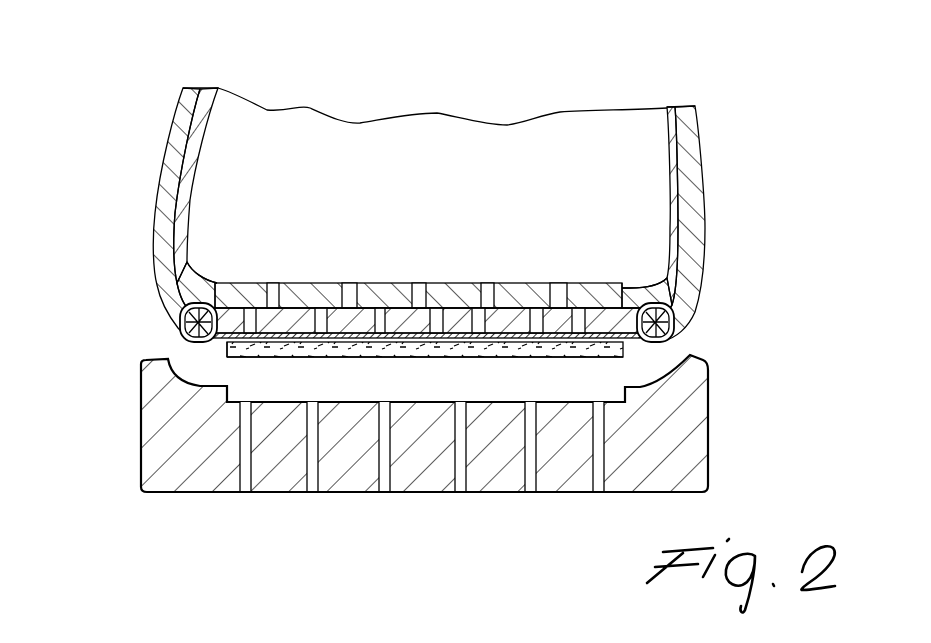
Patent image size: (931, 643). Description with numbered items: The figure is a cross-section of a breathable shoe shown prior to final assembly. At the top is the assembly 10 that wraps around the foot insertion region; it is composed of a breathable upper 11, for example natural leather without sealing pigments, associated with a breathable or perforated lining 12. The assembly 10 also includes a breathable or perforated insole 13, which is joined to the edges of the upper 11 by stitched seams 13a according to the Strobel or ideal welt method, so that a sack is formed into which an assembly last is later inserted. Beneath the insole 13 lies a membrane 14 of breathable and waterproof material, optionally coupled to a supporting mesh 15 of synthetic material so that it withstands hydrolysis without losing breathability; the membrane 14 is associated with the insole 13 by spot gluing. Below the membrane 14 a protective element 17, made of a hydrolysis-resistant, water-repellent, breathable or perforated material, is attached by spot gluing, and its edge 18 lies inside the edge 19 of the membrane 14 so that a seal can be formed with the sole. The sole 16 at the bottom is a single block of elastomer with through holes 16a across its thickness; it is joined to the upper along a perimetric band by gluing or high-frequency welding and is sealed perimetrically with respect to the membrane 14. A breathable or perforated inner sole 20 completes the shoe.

The assembly 10 is at (95, 90).
The upper 11 is at (178, 123).
The lining 12 is at (208, 150).
The insole 13 is at (393, 320).
The stitched seams 13a is at (186, 312).
The membrane 14 is at (490, 308).
The supporting mesh 15 is at (592, 356).
The sole 16 is at (680, 463).
The through holes 16a is at (528, 470).
The protective element 17 is at (410, 355).
The edge of the protective element 18 is at (224, 348).
The edge of the membrane 19 is at (676, 325).
The inner sole 20 is at (305, 295).